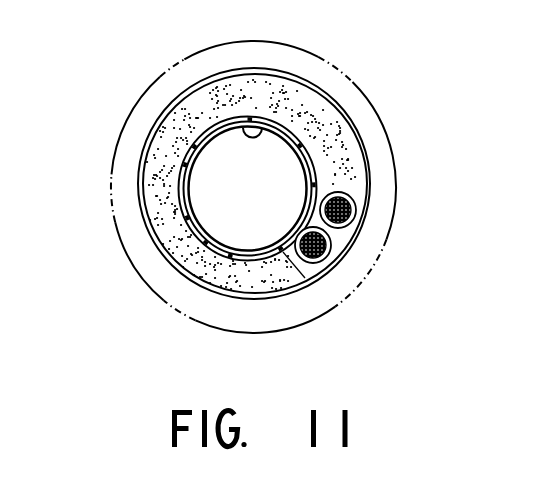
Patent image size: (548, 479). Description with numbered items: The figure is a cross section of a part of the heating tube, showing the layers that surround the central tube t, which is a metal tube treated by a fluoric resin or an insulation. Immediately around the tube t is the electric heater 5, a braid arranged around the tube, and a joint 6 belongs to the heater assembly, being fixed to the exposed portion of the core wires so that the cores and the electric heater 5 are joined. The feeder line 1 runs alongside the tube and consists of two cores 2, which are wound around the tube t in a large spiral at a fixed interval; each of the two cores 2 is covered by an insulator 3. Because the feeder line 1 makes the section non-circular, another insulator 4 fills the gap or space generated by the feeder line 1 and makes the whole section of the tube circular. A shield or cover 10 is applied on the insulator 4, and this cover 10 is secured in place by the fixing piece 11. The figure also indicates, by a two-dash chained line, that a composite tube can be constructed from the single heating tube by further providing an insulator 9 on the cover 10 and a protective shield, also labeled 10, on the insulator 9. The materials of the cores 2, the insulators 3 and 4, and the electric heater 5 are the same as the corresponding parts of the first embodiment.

The feeder line 1 is at (392, 221).
The cores 2 is at (352, 226).
The insulator 3 is at (324, 184).
The insulator 4 is at (282, 280).
The electric heater 5 is at (202, 243).
The joint 6 is at (233, 258).
The insulator 9 is at (134, 141).
The cover 10 is at (113, 221).
The fixing piece 11 is at (327, 263).
The central tube t is at (258, 136).